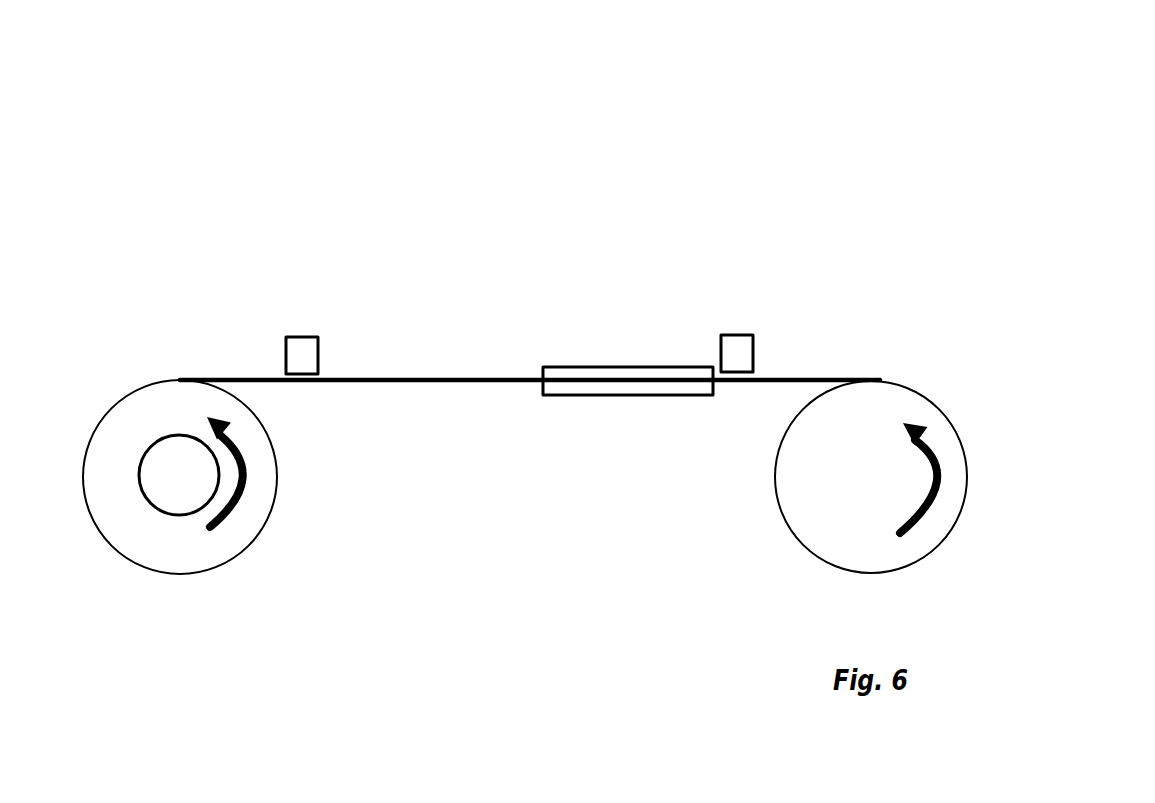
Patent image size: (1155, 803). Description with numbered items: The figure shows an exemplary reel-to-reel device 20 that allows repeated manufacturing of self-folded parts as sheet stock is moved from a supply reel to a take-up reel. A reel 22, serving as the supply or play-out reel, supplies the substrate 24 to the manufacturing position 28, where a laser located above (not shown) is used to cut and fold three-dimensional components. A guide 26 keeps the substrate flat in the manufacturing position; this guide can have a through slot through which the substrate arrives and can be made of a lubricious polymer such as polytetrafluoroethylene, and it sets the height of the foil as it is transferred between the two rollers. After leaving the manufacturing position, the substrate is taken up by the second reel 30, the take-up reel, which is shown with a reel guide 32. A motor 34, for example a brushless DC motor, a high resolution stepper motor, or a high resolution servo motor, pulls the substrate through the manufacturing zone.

The reel-to-reel device 20 is at (911, 124).
The reel 22 is at (780, 512).
The substrate 24 is at (812, 375).
The guide 26 is at (736, 333).
The manufacturing position 28 is at (588, 360).
The second reel 30 is at (113, 543).
The reel guide 32 is at (305, 335).
The motor 34 is at (183, 513).